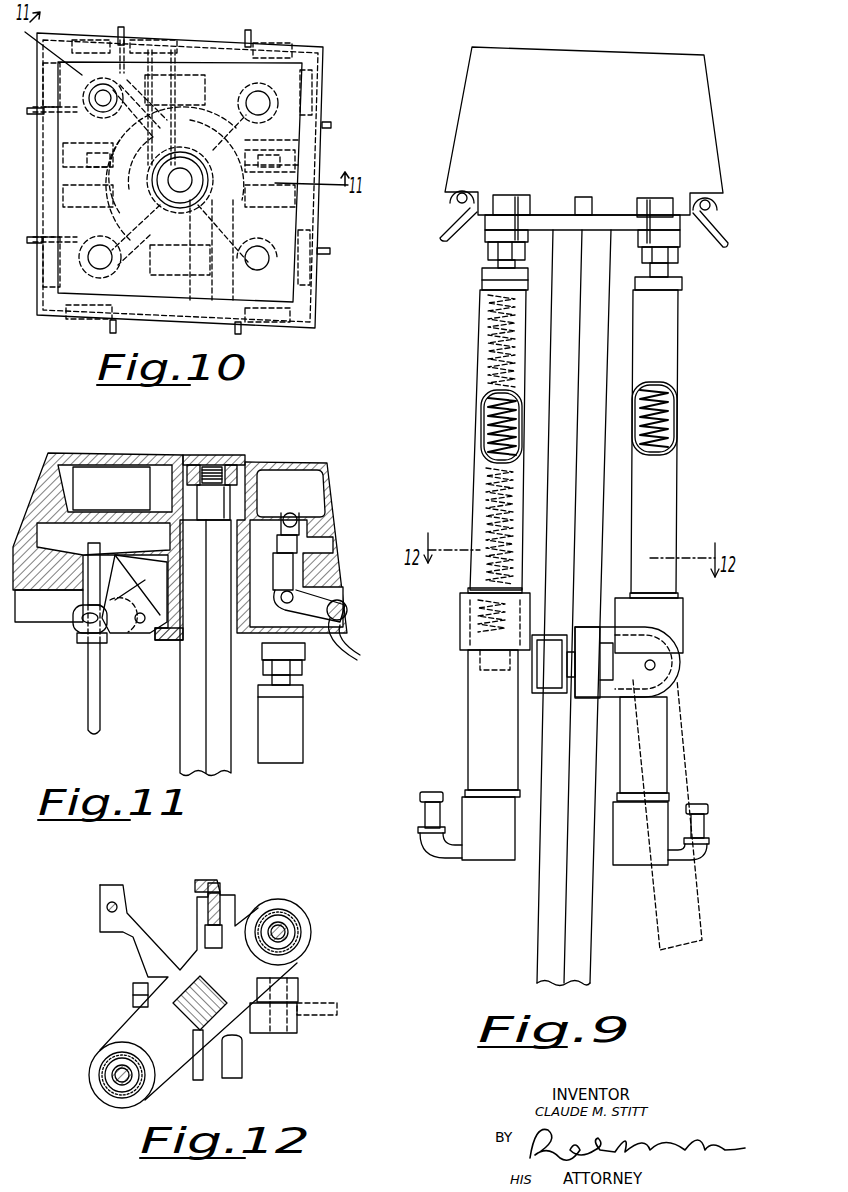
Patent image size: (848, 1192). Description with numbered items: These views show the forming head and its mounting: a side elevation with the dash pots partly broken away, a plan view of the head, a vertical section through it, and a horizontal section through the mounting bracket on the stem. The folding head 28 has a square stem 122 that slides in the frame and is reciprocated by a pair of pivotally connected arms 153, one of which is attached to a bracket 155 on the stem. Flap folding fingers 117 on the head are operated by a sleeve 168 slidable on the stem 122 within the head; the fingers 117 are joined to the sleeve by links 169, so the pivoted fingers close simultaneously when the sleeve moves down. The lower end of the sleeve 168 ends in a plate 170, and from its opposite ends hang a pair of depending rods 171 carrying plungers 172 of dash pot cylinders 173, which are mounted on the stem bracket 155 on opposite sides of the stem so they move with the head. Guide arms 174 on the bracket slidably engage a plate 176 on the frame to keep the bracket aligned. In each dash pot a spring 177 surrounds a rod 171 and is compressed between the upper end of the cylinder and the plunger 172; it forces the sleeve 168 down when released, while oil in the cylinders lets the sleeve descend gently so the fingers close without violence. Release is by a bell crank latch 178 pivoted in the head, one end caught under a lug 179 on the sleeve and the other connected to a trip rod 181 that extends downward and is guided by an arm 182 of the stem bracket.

In FIG. 10, the folding head 28 is at (318, 310).
In FIG. 11, the folding head 28 is at (276, 466).
In FIG. 9, the folding head 28 is at (695, 113).
In FIG. 10, the flap folding fingers 117 is at (331, 122).
In FIG. 11, the flap folding fingers 117 is at (350, 647).
In FIG. 9, the flap folding fingers 117 is at (453, 221).
In FIG. 10, the square stem 122 is at (193, 212).
In FIG. 11, the square stem 122 is at (195, 694).
In FIG. 12, the square stem 122 is at (205, 993).
In FIG. 9, the square stem 122 is at (574, 936).
In FIG. 12, the pivotally connected arms 153 is at (325, 1002).
In FIG. 9, the pivotally connected arms 153 is at (690, 883).
In FIG. 12, the stem bracket 155 is at (147, 1030).
In FIG. 9, the stem bracket 155 is at (677, 648).
In FIG. 10, the sleeve 168 is at (210, 160).
In FIG. 11, the sleeve 168 is at (245, 606).
In FIG. 10, the links 169 is at (288, 218).
In FIG. 11, the links 169 is at (312, 582).
In FIG. 10, the plate 170 is at (257, 146).
In FIG. 11, the plate 170 is at (175, 637).
In FIG. 9, the plate 170 is at (627, 204).
In FIG. 11, the depending rods 171 is at (285, 681).
In FIG. 12, the depending rods 171 is at (283, 925).
In FIG. 9, the depending rods 171 is at (485, 425).
In FIG. 9, the plungers 172 is at (462, 646).
In FIG. 11, the dash pot cylinders 173 is at (292, 717).
In FIG. 12, the dash pot cylinders 173 is at (302, 932).
In FIG. 9, the dash pot cylinders 173 is at (488, 705).
In FIG. 12, the guide arms 174 is at (232, 906).
In FIG. 11, the plate 176 is at (212, 475).
In FIG. 12, the plate 176 is at (228, 872).
In FIG. 9, the spring 177 is at (485, 440).
In FIG. 10, the bell crank latch 178 is at (160, 88).
In FIG. 11, the bell crank latch 178 is at (157, 582).
In FIG. 10, the lug 179 is at (152, 198).
In FIG. 11, the lug 179 is at (166, 545).
In FIG. 10, the trip rod 181 is at (104, 108).
In FIG. 11, the trip rod 181 is at (90, 689).
In FIG. 12, the trip rod 181 is at (116, 905).
In FIG. 12, the arm 182 is at (143, 941).